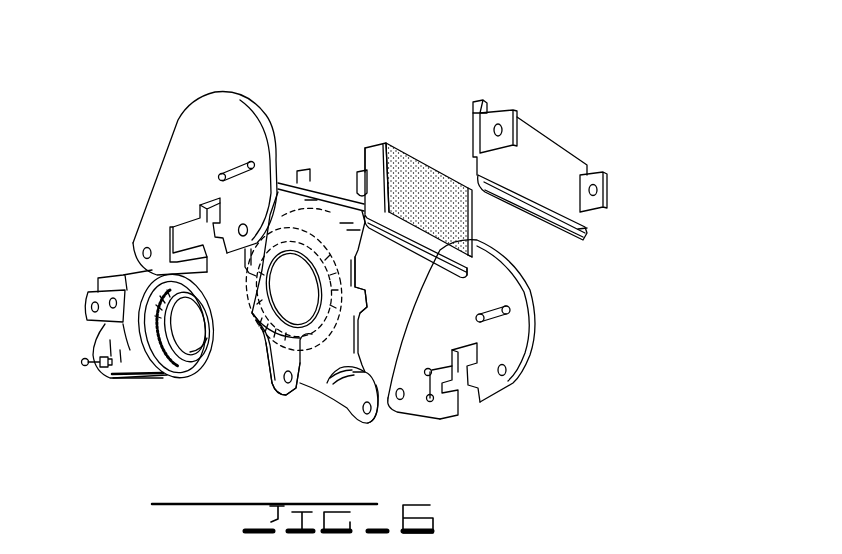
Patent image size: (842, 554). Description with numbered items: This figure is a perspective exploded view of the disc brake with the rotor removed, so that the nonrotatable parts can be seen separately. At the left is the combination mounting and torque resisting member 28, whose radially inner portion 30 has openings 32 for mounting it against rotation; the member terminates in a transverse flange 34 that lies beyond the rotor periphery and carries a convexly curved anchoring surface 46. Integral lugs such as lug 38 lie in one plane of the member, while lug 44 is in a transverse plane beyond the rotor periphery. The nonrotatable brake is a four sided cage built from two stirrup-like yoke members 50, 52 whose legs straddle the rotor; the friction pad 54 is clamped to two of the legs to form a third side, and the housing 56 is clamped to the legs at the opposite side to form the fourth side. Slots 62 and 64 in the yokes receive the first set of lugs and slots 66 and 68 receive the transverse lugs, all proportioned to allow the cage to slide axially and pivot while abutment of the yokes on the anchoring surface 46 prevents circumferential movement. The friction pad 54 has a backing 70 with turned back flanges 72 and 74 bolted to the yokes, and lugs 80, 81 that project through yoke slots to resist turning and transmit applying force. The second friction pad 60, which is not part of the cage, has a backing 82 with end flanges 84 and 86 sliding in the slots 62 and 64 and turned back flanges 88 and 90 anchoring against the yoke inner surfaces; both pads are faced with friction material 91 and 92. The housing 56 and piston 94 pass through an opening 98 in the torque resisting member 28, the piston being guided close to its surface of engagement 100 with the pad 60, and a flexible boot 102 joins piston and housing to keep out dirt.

The combination mounting and torque resisting member 28 is at (301, 226).
The radially inner portion 30 is at (325, 394).
The openings 32 is at (280, 390).
The transverse flange 34 is at (305, 196).
The lug 38 is at (365, 299).
The lug 44 is at (300, 170).
The convexly curved anchoring surface 46 is at (246, 272).
The yoke member 50 is at (490, 341).
The yoke member 52 is at (167, 160).
The friction pad 54 is at (552, 146).
The housing 56 is at (139, 327).
The friction pad 60 is at (418, 176).
The slot 62 is at (456, 380).
The slot 64 is at (197, 224).
The slot 66 is at (483, 308).
The slot 68 is at (243, 167).
The backing 70 is at (559, 155).
The turned back flange 72 is at (507, 115).
The turned back flange 74 is at (605, 174).
The lug 80 is at (593, 232).
The lug 81 is at (484, 108).
The backing 82 is at (398, 240).
The end flange 84 is at (476, 228).
The end flange 86 is at (368, 185).
The turned back flange 88 is at (462, 278).
The turned back flange 90 is at (364, 170).
The friction material 91 is at (440, 188).
The friction material 92 is at (543, 235).
The piston 94 is at (197, 363).
The opening 98 is at (294, 289).
The surface of engagement 100 is at (208, 330).
The flexible boot 102 is at (160, 328).